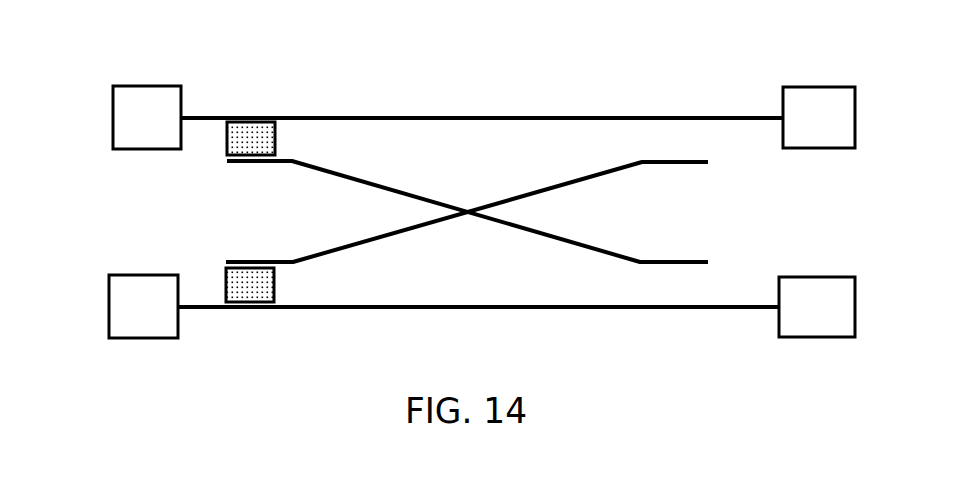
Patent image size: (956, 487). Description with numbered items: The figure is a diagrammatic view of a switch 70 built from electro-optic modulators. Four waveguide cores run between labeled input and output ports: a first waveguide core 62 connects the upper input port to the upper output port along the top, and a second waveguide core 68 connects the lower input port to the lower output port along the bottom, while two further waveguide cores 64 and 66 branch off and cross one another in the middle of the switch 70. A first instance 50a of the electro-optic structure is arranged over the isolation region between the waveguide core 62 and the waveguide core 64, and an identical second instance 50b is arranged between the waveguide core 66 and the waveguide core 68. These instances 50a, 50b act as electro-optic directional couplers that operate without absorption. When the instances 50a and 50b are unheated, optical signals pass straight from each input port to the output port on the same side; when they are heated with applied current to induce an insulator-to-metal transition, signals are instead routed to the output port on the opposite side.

The switch 70 is at (149, 44).
The waveguide core 62 is at (303, 116).
The waveguide core 64 is at (380, 186).
The waveguide core 66 is at (355, 245).
The waveguide core 68 is at (475, 306).
The instance of the structure 50a is at (243, 137).
The instance of the structure 50b is at (247, 288).